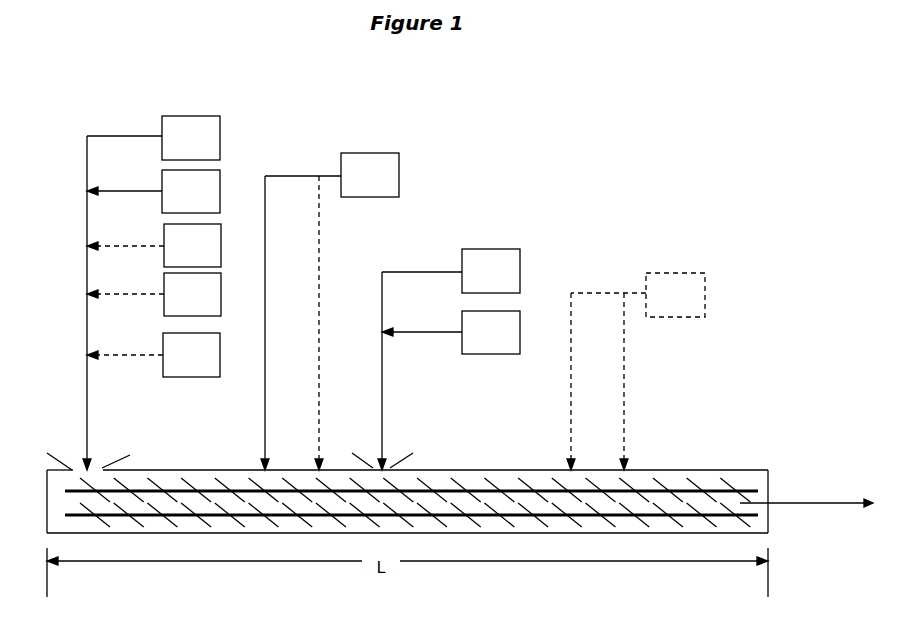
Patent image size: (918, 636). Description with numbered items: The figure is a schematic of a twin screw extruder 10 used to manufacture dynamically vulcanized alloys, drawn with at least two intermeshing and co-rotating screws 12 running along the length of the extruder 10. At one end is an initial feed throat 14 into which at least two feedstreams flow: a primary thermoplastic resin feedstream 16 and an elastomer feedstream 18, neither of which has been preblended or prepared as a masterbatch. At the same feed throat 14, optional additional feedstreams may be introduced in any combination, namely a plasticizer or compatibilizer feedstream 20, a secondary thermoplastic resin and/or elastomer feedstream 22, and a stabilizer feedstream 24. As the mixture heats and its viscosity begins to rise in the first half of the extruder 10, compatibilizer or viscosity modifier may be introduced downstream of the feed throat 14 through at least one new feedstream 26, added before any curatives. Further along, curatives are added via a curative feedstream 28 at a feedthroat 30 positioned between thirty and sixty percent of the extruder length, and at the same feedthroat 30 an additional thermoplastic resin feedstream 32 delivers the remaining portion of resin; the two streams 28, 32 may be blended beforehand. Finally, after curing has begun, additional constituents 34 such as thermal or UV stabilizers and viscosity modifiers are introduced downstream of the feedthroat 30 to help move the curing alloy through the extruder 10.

The twin screw extruder 10 is at (212, 537).
The intermeshing and co-rotating screws 12 is at (703, 515).
The feed throat 14 is at (100, 467).
The primary thermoplastic resin feedstream 16 is at (151, 293).
The elastomer feedstream 18 is at (153, 191).
The plasticizer or compatibilizer feedstream 20 is at (154, 245).
The secondary thermoplastic resin and/or elastomer feedstream 22 is at (154, 294).
The stabilizer feedstream 24 is at (153, 355).
The compatibilizer or viscosity modifier feedstream 26 is at (330, 311).
The curative feedstream 28 is at (449, 359).
The feedthroat 30 is at (388, 468).
The additional thermoplastic resin feedstream 32 is at (451, 332).
The additional constituents 34 is at (636, 371).